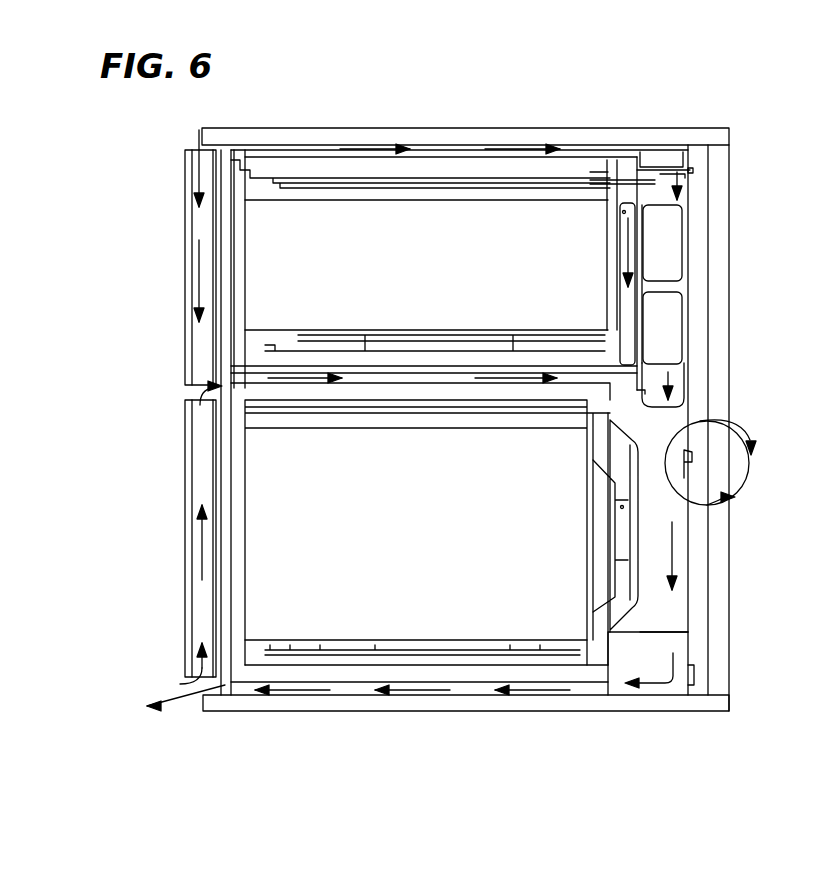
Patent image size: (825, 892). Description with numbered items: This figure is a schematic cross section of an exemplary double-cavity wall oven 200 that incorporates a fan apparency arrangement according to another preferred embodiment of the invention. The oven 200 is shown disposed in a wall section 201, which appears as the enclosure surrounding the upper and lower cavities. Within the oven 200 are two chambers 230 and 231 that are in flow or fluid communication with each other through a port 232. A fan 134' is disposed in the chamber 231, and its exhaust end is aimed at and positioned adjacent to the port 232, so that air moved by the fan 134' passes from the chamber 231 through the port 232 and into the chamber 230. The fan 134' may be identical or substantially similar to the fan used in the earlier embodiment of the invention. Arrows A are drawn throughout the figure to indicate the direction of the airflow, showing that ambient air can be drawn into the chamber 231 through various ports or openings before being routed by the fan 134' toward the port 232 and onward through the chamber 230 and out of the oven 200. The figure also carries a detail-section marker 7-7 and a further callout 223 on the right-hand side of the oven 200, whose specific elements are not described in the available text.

The double-cavity oven 200 is at (252, 115).
The wall section 201 is at (623, 128).
The air duct outlet 223 is at (690, 408).
The chamber 231 is at (672, 607).
The arrows A is at (673, 545).
The fan 134' is at (714, 663).
The chamber 230 is at (574, 696).
The port 232 is at (608, 660).
The section line 7-7 is at (727, 463).